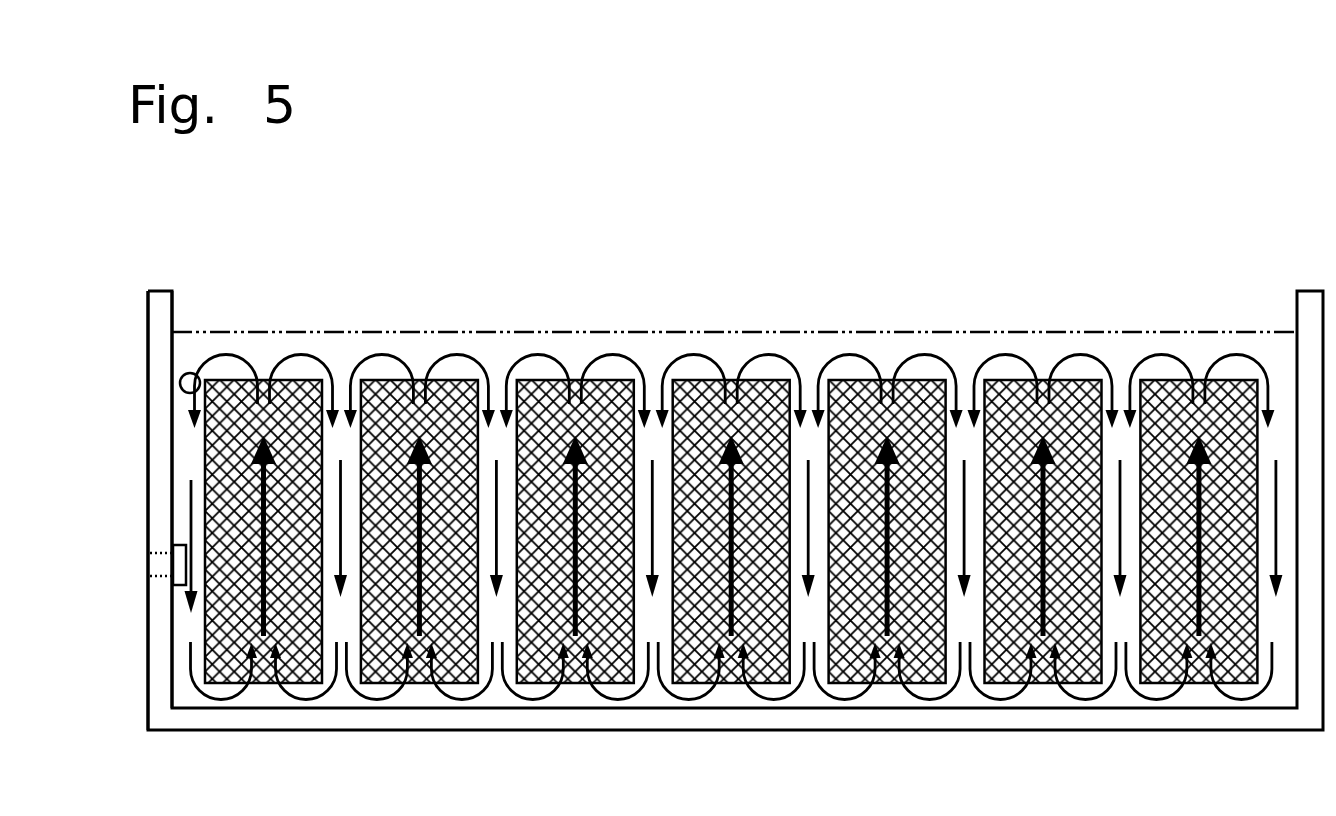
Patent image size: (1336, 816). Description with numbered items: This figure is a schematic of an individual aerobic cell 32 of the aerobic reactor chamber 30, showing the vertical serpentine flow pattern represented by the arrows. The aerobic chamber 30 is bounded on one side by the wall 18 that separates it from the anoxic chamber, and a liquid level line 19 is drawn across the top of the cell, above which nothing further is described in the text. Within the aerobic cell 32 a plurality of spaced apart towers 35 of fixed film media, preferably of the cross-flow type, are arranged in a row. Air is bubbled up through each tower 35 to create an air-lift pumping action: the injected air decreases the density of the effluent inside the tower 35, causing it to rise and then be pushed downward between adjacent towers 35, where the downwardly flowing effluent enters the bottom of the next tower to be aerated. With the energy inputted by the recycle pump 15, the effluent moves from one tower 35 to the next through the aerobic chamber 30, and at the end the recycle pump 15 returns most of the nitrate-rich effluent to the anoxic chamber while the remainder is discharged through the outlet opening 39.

The recycle pump 15 is at (185, 582).
The wall 18 is at (160, 300).
The liquid level 19 is at (923, 332).
The aerobic reactor chamber 30 is at (1057, 272).
The aerobic cell 32 is at (654, 297).
The tower 35 is at (573, 387).
The outlet opening 39 is at (186, 372).